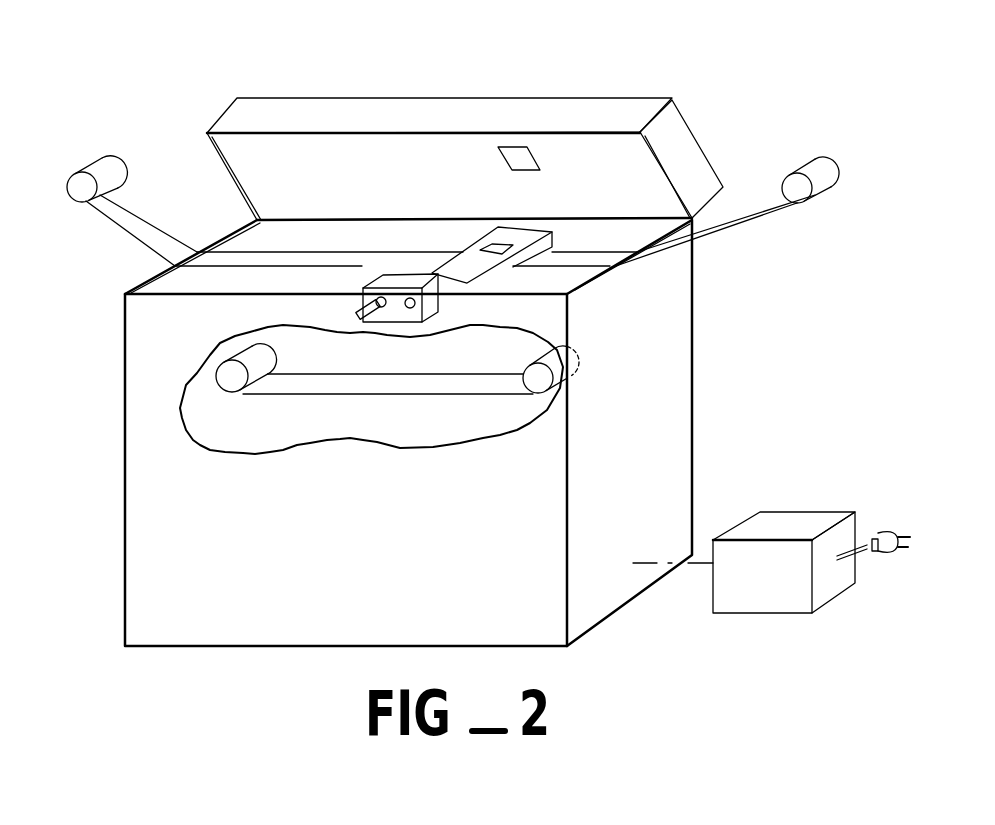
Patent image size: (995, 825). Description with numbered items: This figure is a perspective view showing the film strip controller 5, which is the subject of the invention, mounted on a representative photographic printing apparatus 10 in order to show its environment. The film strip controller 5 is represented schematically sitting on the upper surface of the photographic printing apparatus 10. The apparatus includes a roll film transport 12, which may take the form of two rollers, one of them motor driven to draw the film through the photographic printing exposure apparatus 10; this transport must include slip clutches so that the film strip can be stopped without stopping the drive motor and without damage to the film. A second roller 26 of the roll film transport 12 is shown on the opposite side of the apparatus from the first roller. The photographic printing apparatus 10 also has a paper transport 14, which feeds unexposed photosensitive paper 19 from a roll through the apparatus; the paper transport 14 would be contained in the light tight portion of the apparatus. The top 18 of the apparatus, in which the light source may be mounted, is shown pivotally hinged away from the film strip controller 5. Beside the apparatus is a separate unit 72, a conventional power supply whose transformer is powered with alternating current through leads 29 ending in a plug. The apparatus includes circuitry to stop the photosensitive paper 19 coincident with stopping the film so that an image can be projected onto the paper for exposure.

The photographic printing apparatus 10 is at (437, 83).
The roll film transport 12 is at (108, 141).
The top 18 is at (697, 135).
The take-up roll 26 is at (747, 225).
The film strip controller 5 is at (470, 235).
The paper transport 14 is at (233, 402).
The photosensitive paper 19 is at (462, 395).
The power supply 72 is at (800, 510).
The leads 29 is at (888, 528).